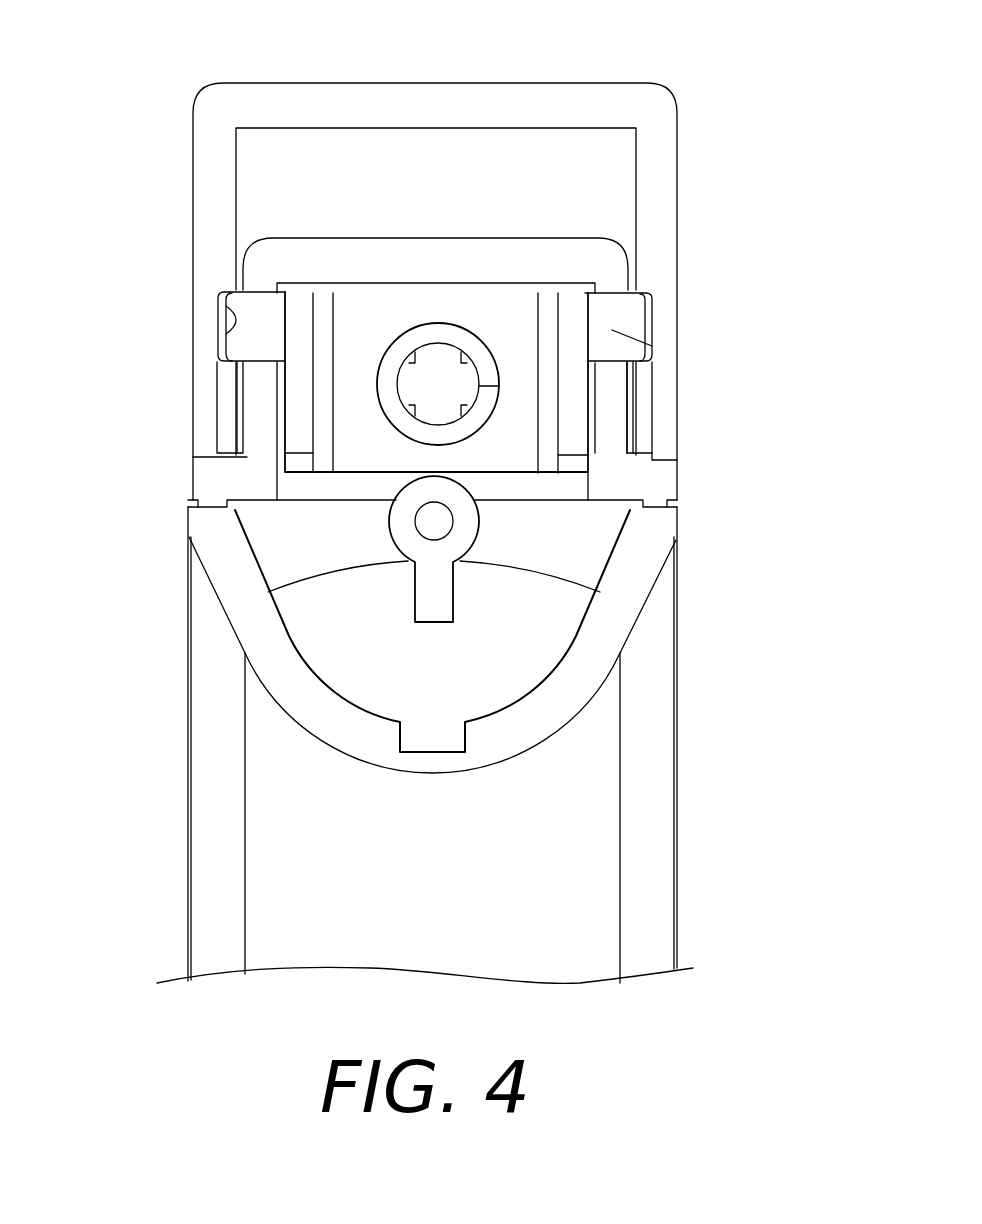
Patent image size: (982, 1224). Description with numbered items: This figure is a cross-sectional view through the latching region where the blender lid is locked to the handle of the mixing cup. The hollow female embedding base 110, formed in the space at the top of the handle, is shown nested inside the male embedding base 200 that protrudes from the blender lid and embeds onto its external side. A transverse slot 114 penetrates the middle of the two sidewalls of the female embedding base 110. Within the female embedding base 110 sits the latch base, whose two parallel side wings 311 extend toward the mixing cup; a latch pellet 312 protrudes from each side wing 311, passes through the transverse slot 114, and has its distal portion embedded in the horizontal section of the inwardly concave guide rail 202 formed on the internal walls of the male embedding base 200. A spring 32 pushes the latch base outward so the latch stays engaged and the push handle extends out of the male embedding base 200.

The male embedding base 200 is at (660, 173).
The female embedding base 110 is at (540, 263).
The guide rail 202 is at (226, 306).
The latch pellet 312 is at (255, 338).
The side wing 311 is at (300, 418).
The transverse slot 114 is at (612, 370).
The spring 32 is at (438, 334).